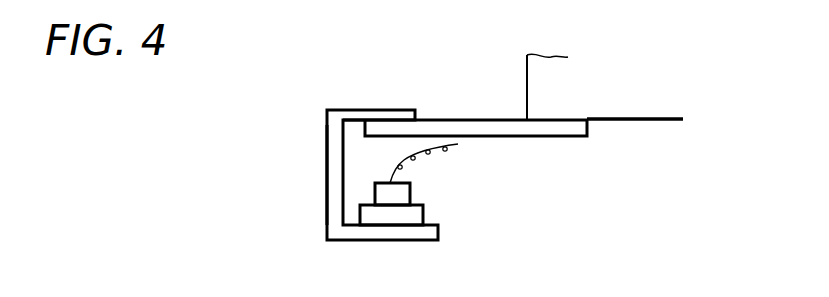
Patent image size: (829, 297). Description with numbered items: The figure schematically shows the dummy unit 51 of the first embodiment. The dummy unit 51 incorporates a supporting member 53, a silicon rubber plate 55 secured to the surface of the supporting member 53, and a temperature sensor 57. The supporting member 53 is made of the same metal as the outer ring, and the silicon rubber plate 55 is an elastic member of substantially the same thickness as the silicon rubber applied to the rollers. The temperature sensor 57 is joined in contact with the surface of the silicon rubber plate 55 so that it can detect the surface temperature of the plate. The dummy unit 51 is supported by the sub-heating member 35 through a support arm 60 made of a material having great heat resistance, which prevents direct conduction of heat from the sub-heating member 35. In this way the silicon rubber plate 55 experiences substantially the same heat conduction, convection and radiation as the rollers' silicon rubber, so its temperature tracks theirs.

The dummy unit 51 is at (318, 130).
The supporting member 53 is at (327, 197).
The support arm 60 is at (441, 120).
The sub-heating member 35 is at (527, 77).
The silicon rubber plate 55 is at (423, 214).
The temperature sensor 57 is at (410, 190).